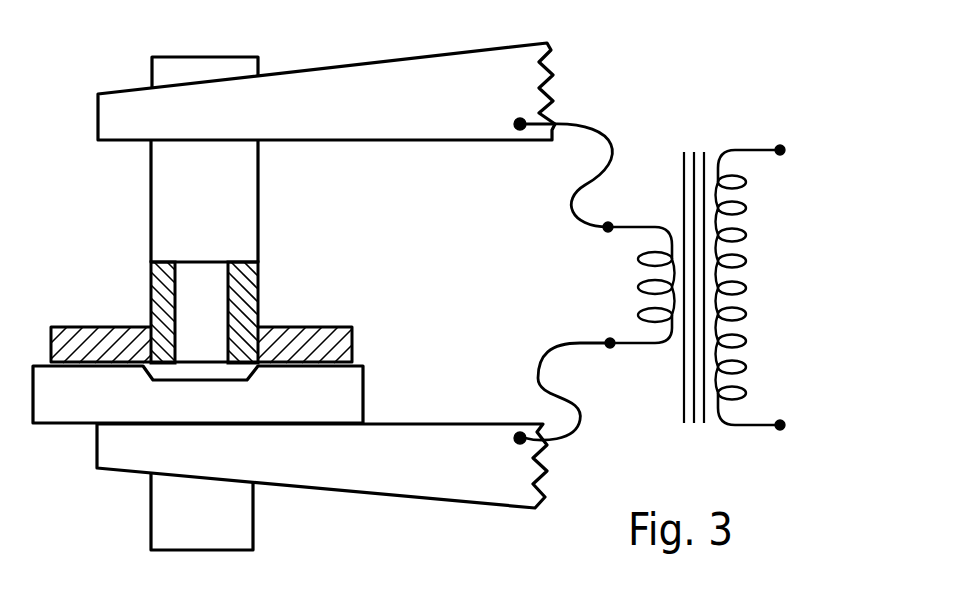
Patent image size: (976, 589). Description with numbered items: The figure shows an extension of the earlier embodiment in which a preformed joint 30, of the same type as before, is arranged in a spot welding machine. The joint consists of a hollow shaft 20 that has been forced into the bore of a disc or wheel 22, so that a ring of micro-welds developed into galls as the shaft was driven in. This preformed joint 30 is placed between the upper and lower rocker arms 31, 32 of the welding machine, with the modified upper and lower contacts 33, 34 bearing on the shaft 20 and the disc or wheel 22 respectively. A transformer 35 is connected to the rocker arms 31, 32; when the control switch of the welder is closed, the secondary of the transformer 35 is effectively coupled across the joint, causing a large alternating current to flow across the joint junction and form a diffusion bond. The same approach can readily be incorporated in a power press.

The hollow shaft 20 is at (163, 286).
The disc or wheel 22 is at (73, 328).
The preformed joint 30 is at (298, 296).
The upper rocker arm 31 is at (336, 83).
The lower rocker arm 32 is at (400, 487).
The modified upper contact 33 is at (246, 194).
The modified lower contact 34 is at (340, 400).
The transformer 35 is at (768, 226).